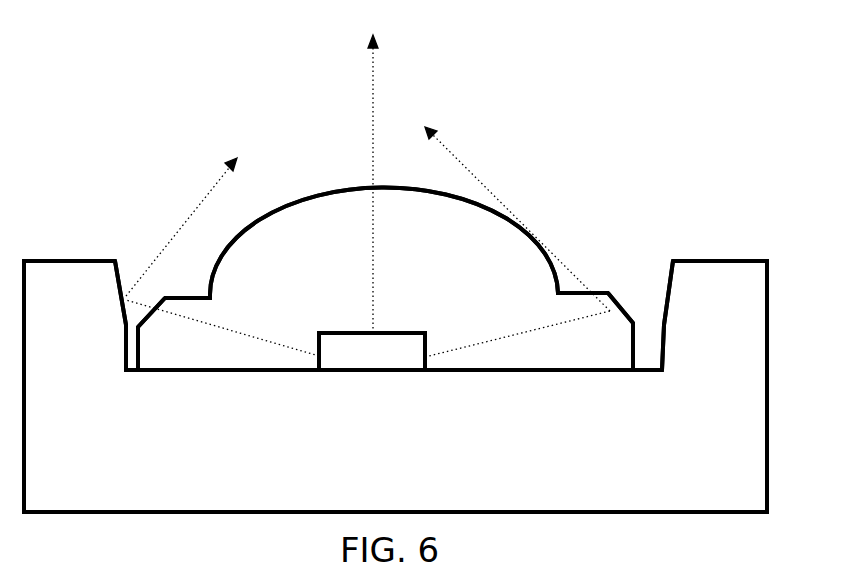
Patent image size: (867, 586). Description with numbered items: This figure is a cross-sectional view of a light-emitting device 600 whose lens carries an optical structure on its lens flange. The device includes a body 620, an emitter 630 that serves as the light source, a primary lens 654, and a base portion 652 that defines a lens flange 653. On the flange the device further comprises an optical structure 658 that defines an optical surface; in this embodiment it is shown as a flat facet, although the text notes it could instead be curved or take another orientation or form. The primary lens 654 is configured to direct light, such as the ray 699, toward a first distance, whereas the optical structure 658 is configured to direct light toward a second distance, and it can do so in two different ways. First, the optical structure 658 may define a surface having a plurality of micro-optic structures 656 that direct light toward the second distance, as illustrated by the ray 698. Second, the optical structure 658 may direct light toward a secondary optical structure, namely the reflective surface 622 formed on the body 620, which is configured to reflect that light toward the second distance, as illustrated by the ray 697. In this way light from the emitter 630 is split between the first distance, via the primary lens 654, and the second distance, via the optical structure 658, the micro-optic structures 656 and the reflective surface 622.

The light-emitting device 600 is at (108, 78).
The body 620 is at (574, 447).
The reflective surface 622 is at (121, 276).
The emitter 630 is at (389, 362).
The base portion 652 is at (552, 362).
The lens flange 653 is at (195, 295).
The primary lens 654 is at (429, 228).
The micro-optic structures 656 is at (614, 313).
The optical structure 658 is at (155, 317).
The ray 697 is at (278, 344).
The ray 698 is at (483, 182).
The ray 699 is at (371, 80).